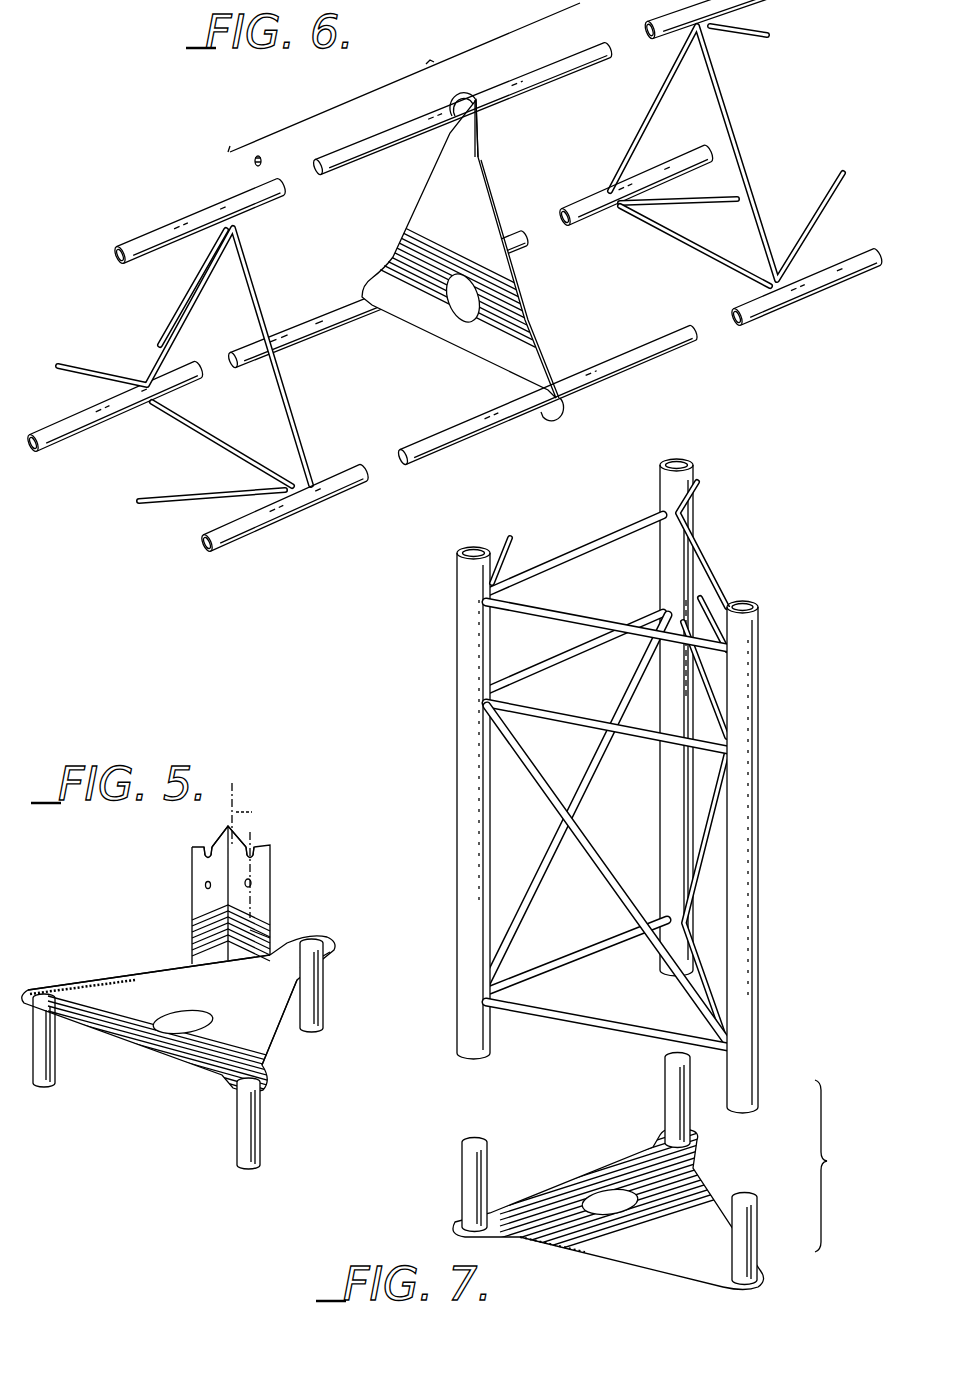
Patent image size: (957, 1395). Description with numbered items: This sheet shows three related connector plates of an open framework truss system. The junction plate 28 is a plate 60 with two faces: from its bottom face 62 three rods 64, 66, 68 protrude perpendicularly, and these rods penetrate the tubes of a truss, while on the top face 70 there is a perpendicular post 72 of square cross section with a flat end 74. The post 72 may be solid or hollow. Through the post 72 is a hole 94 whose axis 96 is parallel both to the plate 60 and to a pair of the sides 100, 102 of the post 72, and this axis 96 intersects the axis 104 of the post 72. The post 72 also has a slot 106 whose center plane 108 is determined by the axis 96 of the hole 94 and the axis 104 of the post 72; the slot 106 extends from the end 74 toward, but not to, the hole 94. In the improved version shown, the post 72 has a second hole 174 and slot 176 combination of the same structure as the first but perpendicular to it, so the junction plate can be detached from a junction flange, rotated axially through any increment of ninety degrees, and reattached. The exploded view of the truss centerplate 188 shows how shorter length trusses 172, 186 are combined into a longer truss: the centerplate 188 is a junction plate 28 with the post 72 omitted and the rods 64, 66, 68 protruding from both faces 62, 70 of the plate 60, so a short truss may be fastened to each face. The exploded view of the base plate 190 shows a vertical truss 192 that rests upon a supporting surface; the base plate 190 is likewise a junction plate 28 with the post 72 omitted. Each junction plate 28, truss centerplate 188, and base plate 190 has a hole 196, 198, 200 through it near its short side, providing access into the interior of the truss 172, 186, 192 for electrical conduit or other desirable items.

In FIG. 5, the junction plate 28 is at (100, 943).
In FIG. 5, the plate 60 is at (210, 1070).
In FIG. 5, the bottom face 62 is at (260, 1052).
In FIG. 5, the rod 64 is at (262, 1130).
In FIG. 5, the rod 66 is at (323, 1008).
In FIG. 5, the rod 68 is at (57, 1063).
In FIG. 5, the top face 70 is at (137, 983).
In FIG. 5, the post 72 is at (186, 947).
In FIG. 5, the flat end 74 is at (220, 827).
In FIG. 5, the hole 94 is at (250, 886).
In FIG. 5, the axis 96 is at (282, 868).
In FIG. 5, the side 100 is at (192, 914).
In FIG. 5, the side 102 is at (268, 928).
In FIG. 5, the axis 104 is at (237, 790).
In FIG. 5, the slot 106 is at (254, 844).
In FIG. 5, the center plane 108 is at (252, 814).
In FIG. 6, the shorter length truss 172 is at (806, 320).
In FIG. 5, the second hole 174 is at (205, 886).
In FIG. 5, the second slot 176 is at (206, 843).
In FIG. 6, the shorter length truss 186 is at (284, 542).
In FIG. 6, the truss centerplate 188 is at (580, 410).
In FIG. 7, the base plate 190 is at (582, 1156).
In FIG. 7, the vertical truss 192 is at (802, 762).
In FIG. 5, the hole 196 is at (177, 1033).
In FIG. 6, the hole 198 is at (458, 323).
In FIG. 7, the hole 200 is at (595, 1195).